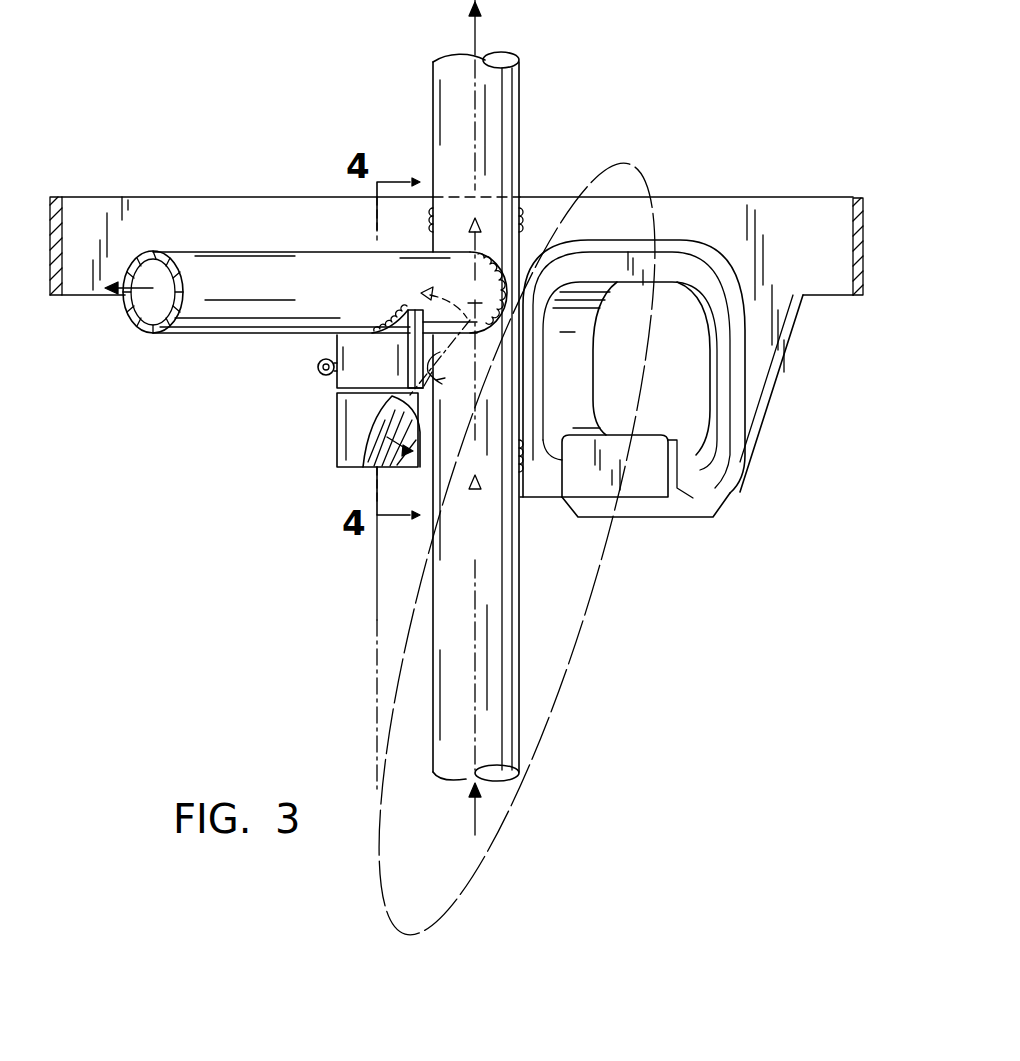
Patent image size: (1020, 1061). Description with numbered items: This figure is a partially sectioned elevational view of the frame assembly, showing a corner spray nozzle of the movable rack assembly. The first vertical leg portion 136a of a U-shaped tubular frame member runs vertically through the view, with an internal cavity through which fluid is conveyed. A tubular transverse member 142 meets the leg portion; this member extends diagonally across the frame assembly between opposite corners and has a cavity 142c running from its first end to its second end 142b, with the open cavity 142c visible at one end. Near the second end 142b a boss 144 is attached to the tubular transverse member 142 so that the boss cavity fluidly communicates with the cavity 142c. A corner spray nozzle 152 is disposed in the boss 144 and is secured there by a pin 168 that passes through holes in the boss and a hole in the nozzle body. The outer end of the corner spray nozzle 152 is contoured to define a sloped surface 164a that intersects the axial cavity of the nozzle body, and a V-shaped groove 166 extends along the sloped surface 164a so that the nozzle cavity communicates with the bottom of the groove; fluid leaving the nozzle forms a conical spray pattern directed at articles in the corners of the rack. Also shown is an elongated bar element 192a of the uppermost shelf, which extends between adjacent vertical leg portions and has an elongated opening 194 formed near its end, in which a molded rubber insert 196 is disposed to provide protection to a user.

The first vertical leg portion 136a is at (507, 97).
The tubular transverse member 142 is at (240, 265).
The second end 142b is at (446, 270).
The cavity 142c is at (140, 315).
The boss 144 is at (353, 377).
The corner spray nozzle 152 is at (336, 447).
The sloped surface 164a is at (360, 460).
The V-shaped groove 166 is at (390, 427).
The pin 168 is at (318, 367).
The elongated bar element 192a is at (829, 212).
The elongated opening 194 is at (683, 368).
The molded rubber insert 196 is at (647, 468).